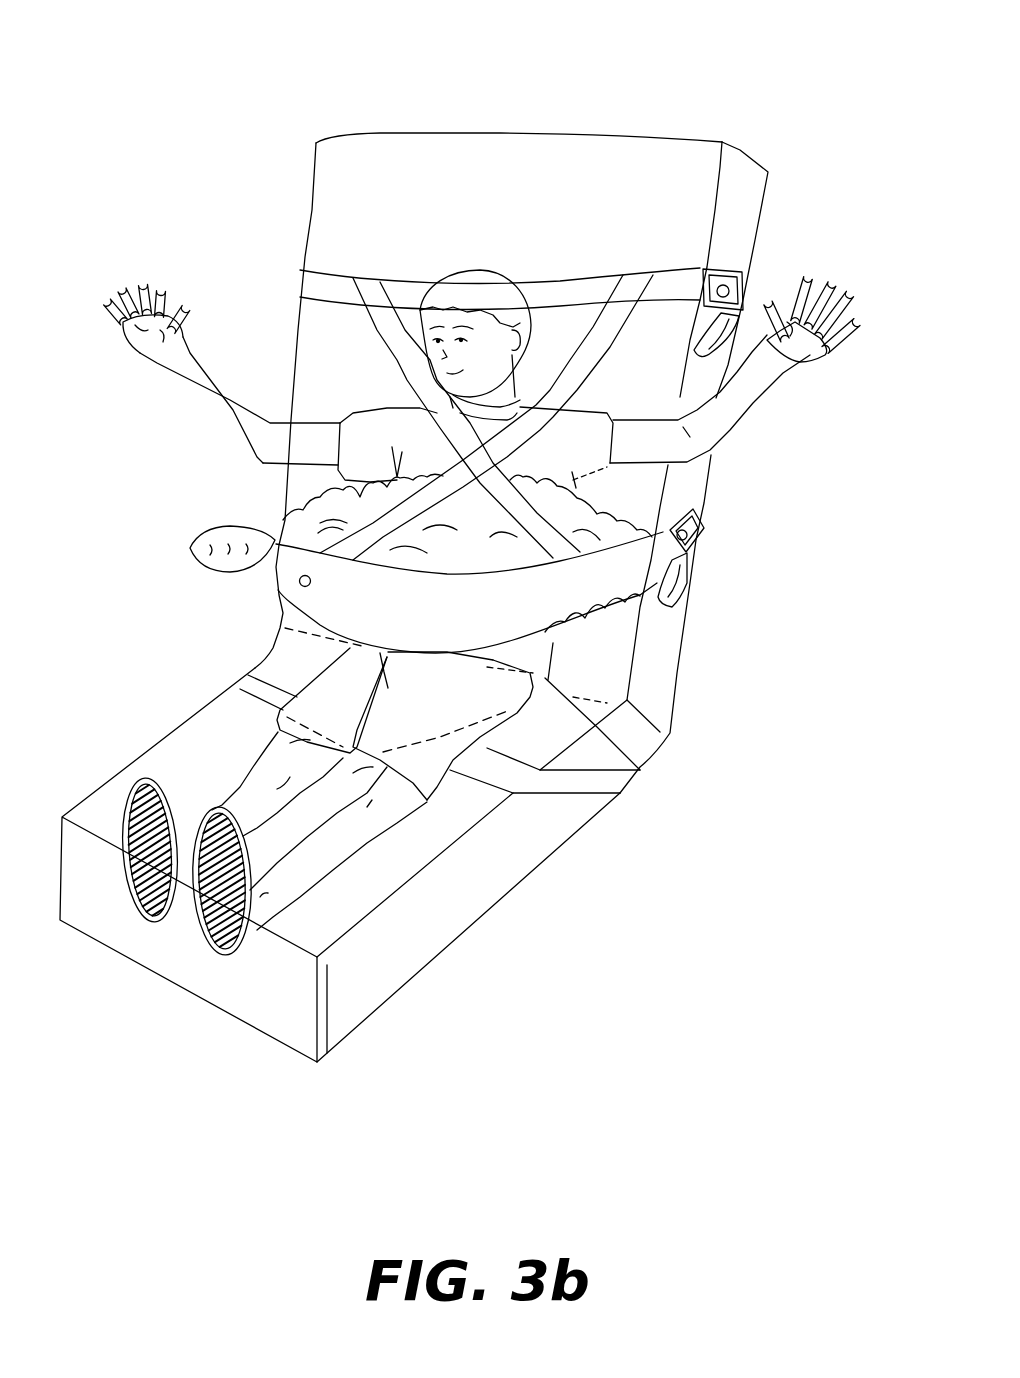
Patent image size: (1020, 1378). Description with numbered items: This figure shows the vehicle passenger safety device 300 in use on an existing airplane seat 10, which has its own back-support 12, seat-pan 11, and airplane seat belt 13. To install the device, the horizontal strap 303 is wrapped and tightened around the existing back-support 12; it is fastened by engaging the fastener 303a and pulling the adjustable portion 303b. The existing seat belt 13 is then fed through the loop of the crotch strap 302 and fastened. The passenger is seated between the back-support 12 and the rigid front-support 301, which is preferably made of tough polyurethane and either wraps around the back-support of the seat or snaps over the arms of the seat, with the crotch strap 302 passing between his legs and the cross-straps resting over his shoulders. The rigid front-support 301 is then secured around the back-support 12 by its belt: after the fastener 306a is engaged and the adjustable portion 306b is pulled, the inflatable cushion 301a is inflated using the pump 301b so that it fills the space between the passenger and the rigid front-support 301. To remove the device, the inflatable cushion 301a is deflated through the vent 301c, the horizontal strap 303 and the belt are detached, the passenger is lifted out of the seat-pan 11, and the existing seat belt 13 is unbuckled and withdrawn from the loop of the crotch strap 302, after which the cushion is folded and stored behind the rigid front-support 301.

The airplane seat 10 is at (490, 128).
The seat-pan 11 is at (420, 940).
The back-support 12 is at (752, 157).
The airplane seat belt 13 is at (620, 793).
The vehicle passenger safety device 300 is at (403, 290).
The rigid front-support 301 is at (583, 605).
The inflatable cushion 301a is at (267, 520).
The pump 301b is at (190, 552).
The vent 301c is at (299, 582).
The crotch strap 302 is at (640, 768).
The horizontal strap 303 is at (323, 267).
The fastener 303a is at (740, 280).
The adjustable portion 303b is at (745, 310).
The fastener 306a is at (705, 522).
The adjustable portion 306b is at (685, 592).